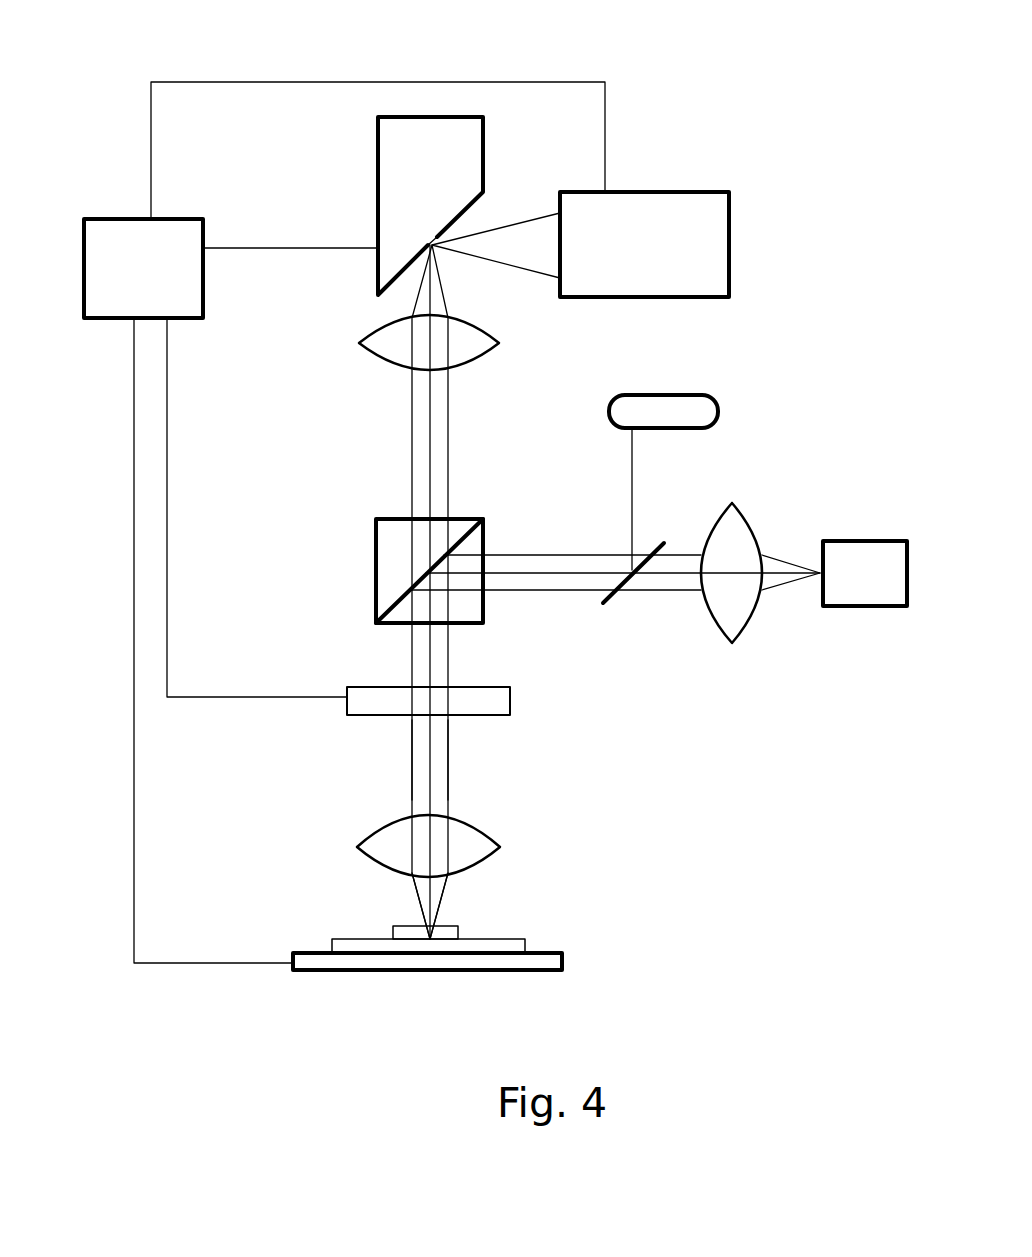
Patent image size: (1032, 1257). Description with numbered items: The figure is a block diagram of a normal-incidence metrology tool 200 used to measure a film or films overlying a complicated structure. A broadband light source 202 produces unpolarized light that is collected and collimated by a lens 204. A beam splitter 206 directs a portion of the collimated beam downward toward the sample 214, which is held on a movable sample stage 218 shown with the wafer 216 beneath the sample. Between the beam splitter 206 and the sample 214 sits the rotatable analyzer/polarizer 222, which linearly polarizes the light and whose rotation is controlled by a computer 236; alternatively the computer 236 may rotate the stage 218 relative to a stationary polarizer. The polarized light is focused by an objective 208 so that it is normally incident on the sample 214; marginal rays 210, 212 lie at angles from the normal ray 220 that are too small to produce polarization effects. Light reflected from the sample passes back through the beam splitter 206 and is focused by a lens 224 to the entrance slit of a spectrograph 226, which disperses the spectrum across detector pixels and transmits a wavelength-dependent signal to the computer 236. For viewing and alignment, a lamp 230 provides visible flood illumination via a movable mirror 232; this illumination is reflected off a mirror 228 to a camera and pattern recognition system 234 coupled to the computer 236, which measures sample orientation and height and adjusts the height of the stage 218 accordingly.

The metrology tool 200 is at (674, 64).
The broadband light source 202 is at (863, 541).
The lens 204 is at (743, 513).
The beam splitter 206 is at (375, 567).
The objective 208 is at (490, 832).
The marginal ray 210 is at (448, 887).
The marginal ray 212 is at (410, 887).
The sample 214 is at (390, 938).
The wafer 216 is at (507, 938).
The sample stage 218 is at (548, 972).
The normal ray 220 is at (425, 776).
The rotatable analyzer/polarizer 222 is at (347, 687).
The lens 224 is at (360, 341).
The spectrograph 226 is at (377, 132).
The mirror 228 is at (467, 215).
The lamp 230 is at (672, 395).
The movable mirror 232 is at (615, 593).
The camera and pattern recognition system 234 is at (729, 245).
The computer 236 is at (127, 215).